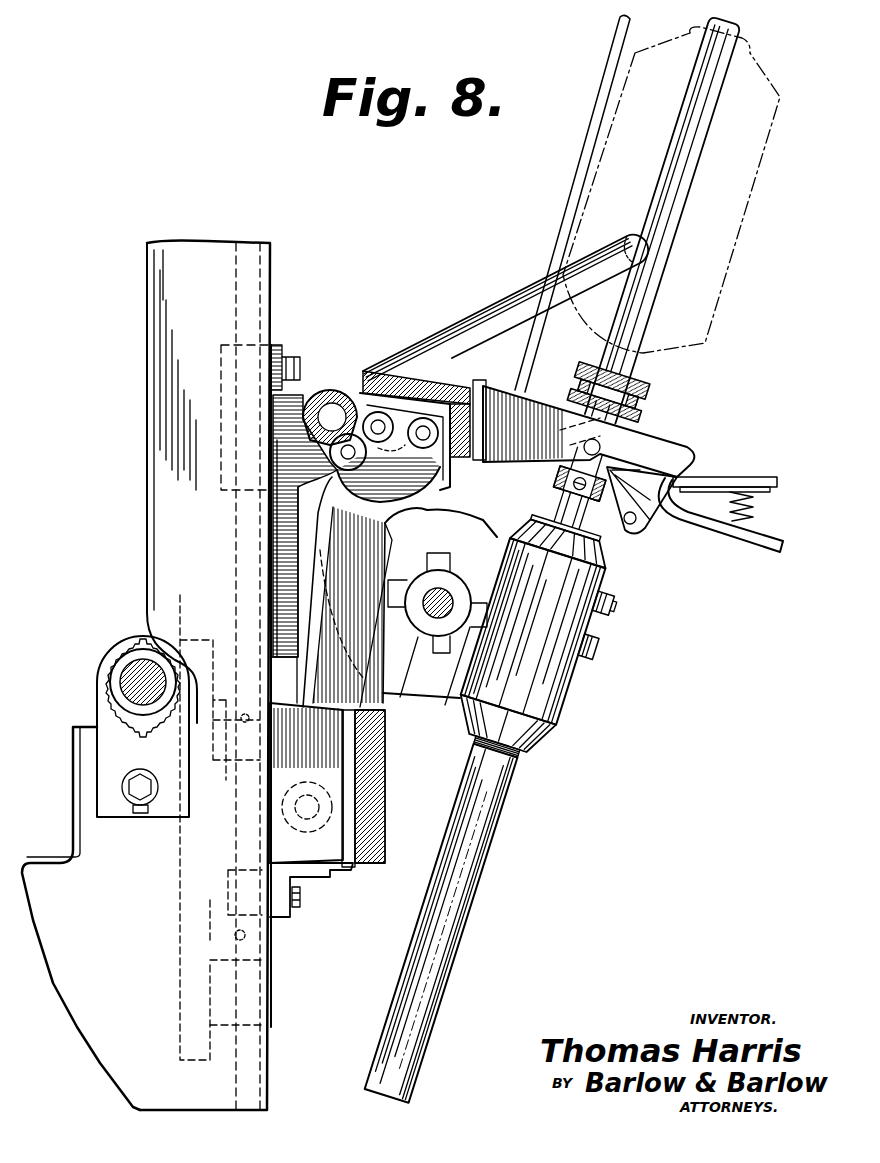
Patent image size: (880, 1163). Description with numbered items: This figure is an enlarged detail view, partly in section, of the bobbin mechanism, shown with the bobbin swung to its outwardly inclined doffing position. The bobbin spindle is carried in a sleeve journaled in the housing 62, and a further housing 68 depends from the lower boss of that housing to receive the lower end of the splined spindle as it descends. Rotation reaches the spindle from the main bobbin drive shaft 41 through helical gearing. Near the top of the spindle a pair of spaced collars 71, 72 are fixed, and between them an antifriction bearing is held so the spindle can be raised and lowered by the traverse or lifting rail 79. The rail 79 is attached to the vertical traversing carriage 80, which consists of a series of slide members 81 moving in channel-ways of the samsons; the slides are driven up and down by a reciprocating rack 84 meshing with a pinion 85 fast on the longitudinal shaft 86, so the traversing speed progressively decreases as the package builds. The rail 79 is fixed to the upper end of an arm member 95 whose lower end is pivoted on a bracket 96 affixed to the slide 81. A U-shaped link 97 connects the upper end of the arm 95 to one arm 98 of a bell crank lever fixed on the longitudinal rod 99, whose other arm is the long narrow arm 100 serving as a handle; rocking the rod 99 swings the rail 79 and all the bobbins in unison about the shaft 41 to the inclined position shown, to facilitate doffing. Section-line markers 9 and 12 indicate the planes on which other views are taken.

The section line 12- 12 is at (147, 235).
The slide members 81 is at (215, 352).
The vertical traversing reciprocable carriage 80 is at (272, 996).
The rack 84 is at (180, 1039).
The pinion 85 is at (102, 660).
The shaft 86 is at (133, 660).
The brackets 96 is at (317, 873).
The U-shaped link 97 is at (356, 551).
The arm of bell crank lever 98 is at (370, 456).
The rod 99 is at (328, 390).
The traverse or lifting rail 79 is at (418, 378).
The long narrow arm 100 is at (517, 296).
The section line 9- 9 is at (528, 387).
The collar 71 is at (689, 228).
The collar 72 is at (610, 520).
The main bobbin drive shaft 41 is at (441, 600).
The housing 62 is at (558, 643).
The arm members 95 is at (365, 680).
The housing 68 is at (465, 926).